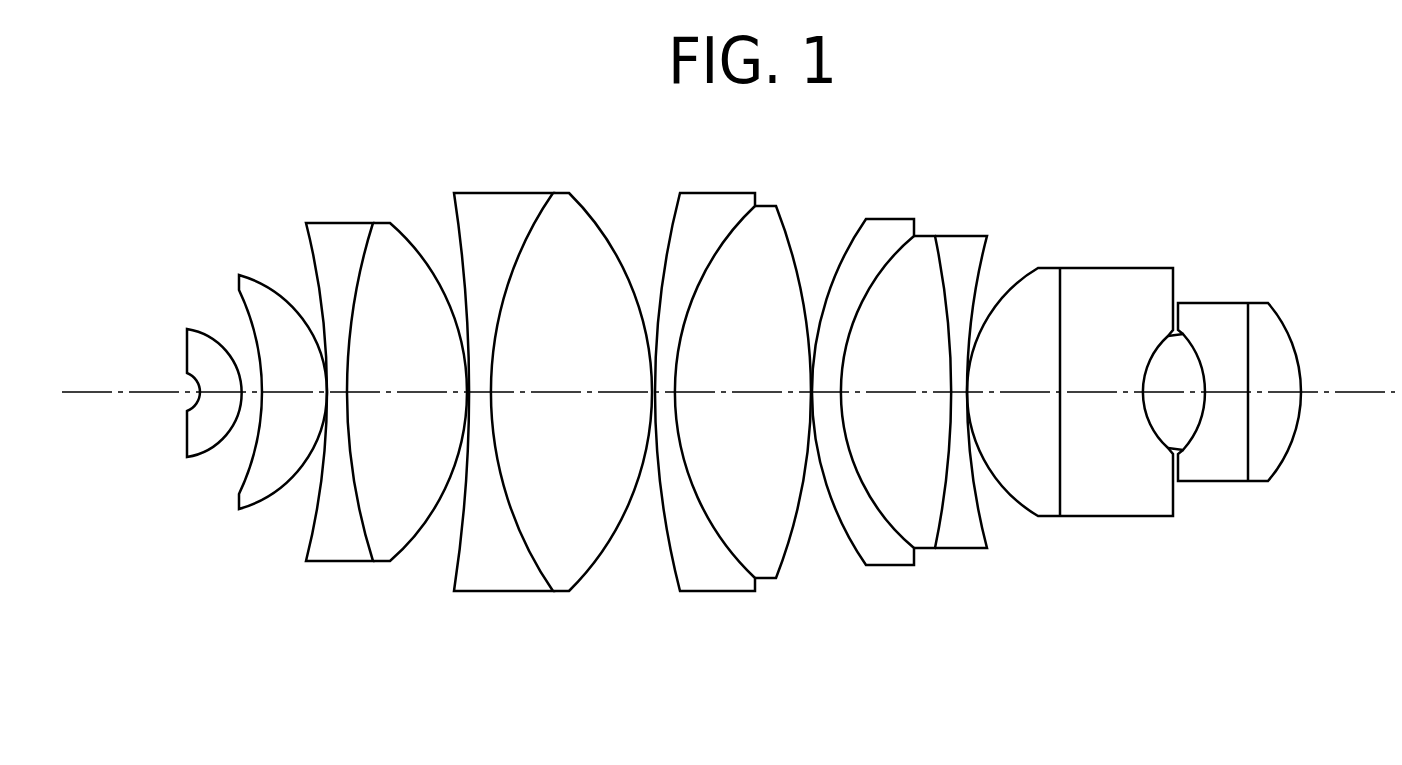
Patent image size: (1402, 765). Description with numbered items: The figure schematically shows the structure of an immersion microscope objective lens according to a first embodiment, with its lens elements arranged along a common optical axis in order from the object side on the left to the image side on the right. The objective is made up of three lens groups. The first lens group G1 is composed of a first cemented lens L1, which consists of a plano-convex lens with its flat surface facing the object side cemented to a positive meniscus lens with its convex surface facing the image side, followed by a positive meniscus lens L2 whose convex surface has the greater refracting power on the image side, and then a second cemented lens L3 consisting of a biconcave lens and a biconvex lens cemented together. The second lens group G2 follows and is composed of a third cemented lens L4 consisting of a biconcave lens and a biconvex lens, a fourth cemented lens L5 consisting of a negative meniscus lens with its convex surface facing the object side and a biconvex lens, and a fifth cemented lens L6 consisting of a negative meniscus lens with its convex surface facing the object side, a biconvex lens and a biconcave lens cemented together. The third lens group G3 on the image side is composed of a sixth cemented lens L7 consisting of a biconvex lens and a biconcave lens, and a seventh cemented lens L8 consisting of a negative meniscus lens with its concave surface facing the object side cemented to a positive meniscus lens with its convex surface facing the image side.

The first cemented lens L1 is at (202, 457).
The positive meniscus lens L2 is at (267, 509).
The second cemented lens L3 is at (386, 441).
The third cemented lens L4 is at (518, 591).
The fourth cemented lens L5 is at (715, 591).
The fifth cemented lens L6 is at (899, 437).
The sixth cemented lens L7 is at (1100, 516).
The seventh cemented lens L8 is at (1239, 441).
The first lens group G1 is at (322, 475).
The second lens group G2 is at (728, 476).
The third lens group G3 is at (1134, 479).